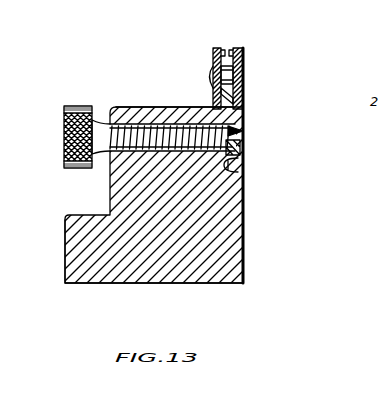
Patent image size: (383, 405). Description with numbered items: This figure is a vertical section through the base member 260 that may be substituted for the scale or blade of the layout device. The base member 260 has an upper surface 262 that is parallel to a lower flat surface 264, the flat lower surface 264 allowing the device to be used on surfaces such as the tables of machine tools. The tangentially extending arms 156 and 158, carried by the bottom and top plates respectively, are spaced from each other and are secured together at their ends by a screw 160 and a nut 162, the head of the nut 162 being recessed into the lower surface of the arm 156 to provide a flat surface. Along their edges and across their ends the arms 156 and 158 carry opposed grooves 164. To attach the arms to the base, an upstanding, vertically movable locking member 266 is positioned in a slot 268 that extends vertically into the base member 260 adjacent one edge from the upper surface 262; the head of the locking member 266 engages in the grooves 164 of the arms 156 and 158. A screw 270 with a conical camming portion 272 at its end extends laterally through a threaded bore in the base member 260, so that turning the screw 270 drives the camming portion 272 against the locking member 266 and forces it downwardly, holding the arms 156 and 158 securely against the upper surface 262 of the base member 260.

The arm 156 is at (243, 72).
The arm 158 is at (211, 74).
The screw 160 is at (213, 72).
The nut 162 is at (229, 66).
The grooves 164 is at (213, 96).
The base member 260 is at (224, 279).
The upper surface 262 is at (154, 108).
The lower flat surface 264 is at (118, 283).
The locking member 266 is at (244, 131).
The slot 268 is at (243, 167).
The screw 270 is at (101, 119).
The conical camming portion 272 is at (240, 150).